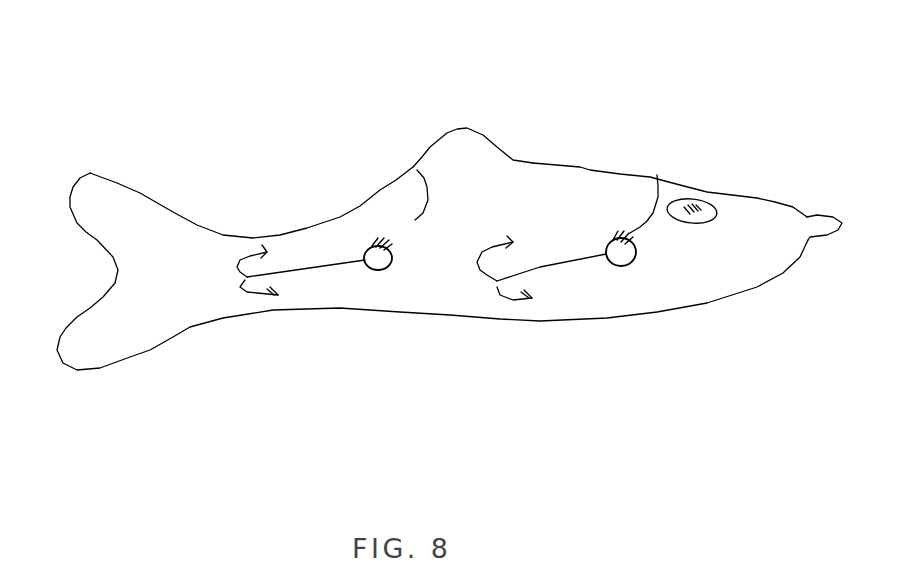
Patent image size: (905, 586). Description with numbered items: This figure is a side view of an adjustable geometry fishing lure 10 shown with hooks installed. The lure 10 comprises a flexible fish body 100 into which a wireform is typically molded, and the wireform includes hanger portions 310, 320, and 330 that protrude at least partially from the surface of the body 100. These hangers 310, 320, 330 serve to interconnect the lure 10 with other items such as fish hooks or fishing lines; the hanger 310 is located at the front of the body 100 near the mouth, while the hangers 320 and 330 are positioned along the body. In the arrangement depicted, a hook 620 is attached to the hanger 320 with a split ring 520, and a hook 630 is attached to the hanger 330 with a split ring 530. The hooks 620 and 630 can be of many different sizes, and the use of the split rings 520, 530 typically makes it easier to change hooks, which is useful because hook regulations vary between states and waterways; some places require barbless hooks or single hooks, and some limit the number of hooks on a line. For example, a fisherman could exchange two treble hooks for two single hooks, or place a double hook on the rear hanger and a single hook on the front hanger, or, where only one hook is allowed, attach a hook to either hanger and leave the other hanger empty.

The adjustable geometry fishing lure 10 is at (612, 120).
The flexible fish body 100 is at (432, 316).
The hanger portion 310 is at (822, 295).
The hanger portion 320 is at (702, 182).
The hanger portion 330 is at (415, 117).
The split ring 520 is at (566, 341).
The split ring 530 is at (298, 352).
The hook 620 is at (462, 359).
The hook 630 is at (206, 392).